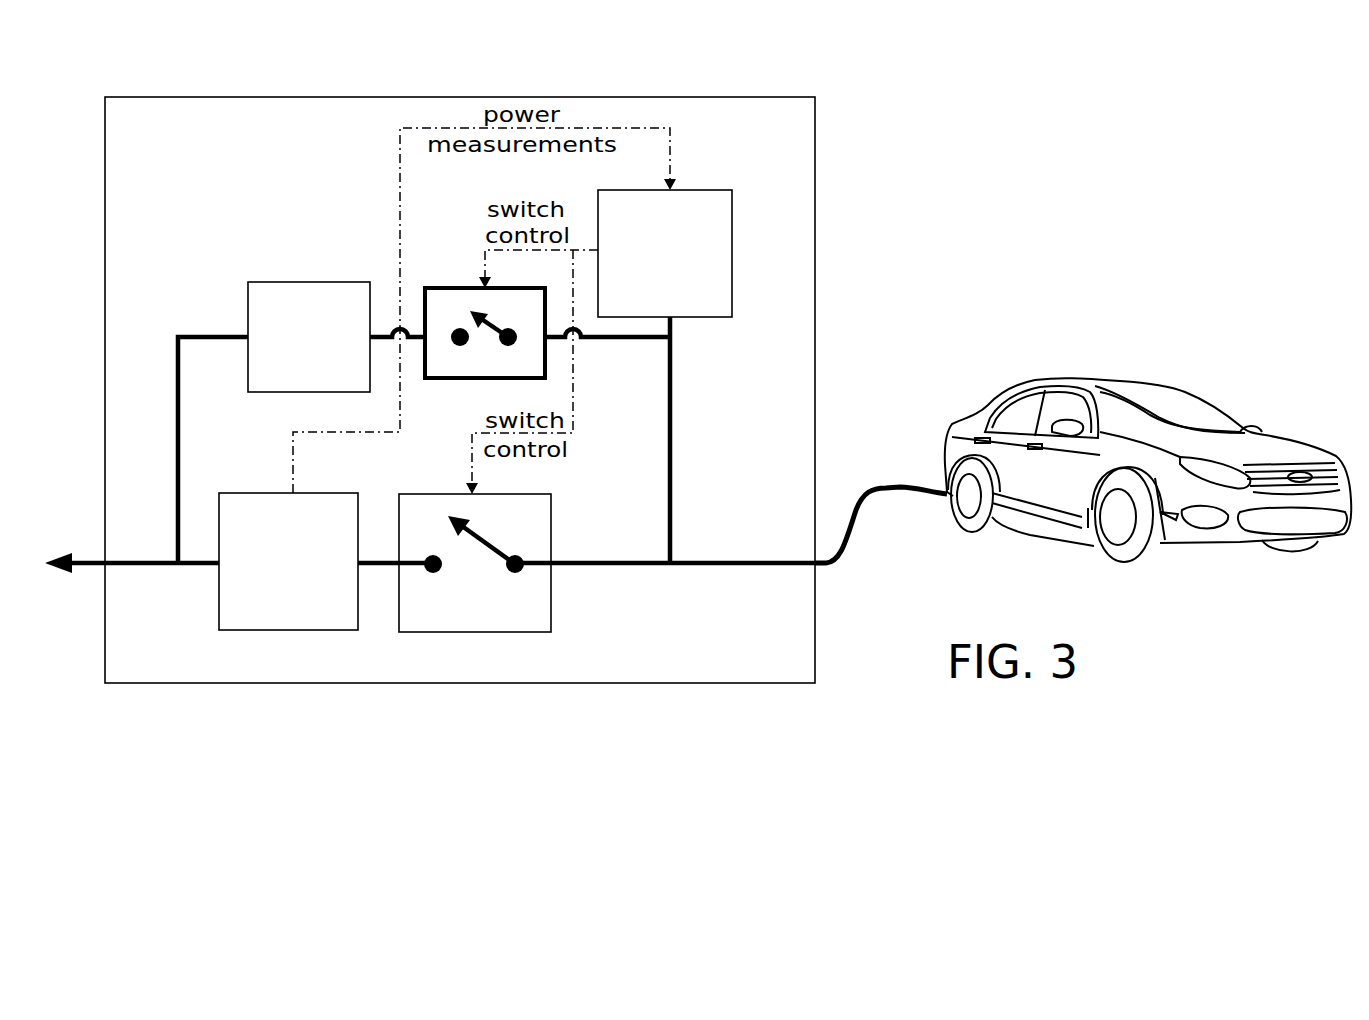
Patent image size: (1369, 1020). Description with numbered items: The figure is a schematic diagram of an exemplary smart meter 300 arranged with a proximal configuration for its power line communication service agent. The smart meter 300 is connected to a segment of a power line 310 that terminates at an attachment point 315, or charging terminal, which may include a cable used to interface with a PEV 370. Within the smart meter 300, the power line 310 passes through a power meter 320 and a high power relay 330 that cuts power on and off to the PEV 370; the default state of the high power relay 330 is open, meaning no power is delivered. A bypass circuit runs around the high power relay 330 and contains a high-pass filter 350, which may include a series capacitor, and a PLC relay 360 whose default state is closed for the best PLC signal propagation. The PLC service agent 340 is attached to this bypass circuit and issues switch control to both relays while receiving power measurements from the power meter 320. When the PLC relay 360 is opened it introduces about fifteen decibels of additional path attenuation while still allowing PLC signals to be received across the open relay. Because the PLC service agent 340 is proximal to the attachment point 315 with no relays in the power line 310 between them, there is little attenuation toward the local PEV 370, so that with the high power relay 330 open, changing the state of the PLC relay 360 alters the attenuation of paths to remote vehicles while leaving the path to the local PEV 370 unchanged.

The smart meter 300 is at (243, 97).
The power line 310 is at (85, 558).
The attachment point 315 is at (903, 484).
The power meter 320 is at (268, 493).
The high power relay 330 is at (552, 597).
The PLC service agent 340 is at (703, 190).
The high-pass filter 350 is at (305, 282).
The PLC relay 360 is at (468, 288).
The PEV 370 is at (1132, 378).